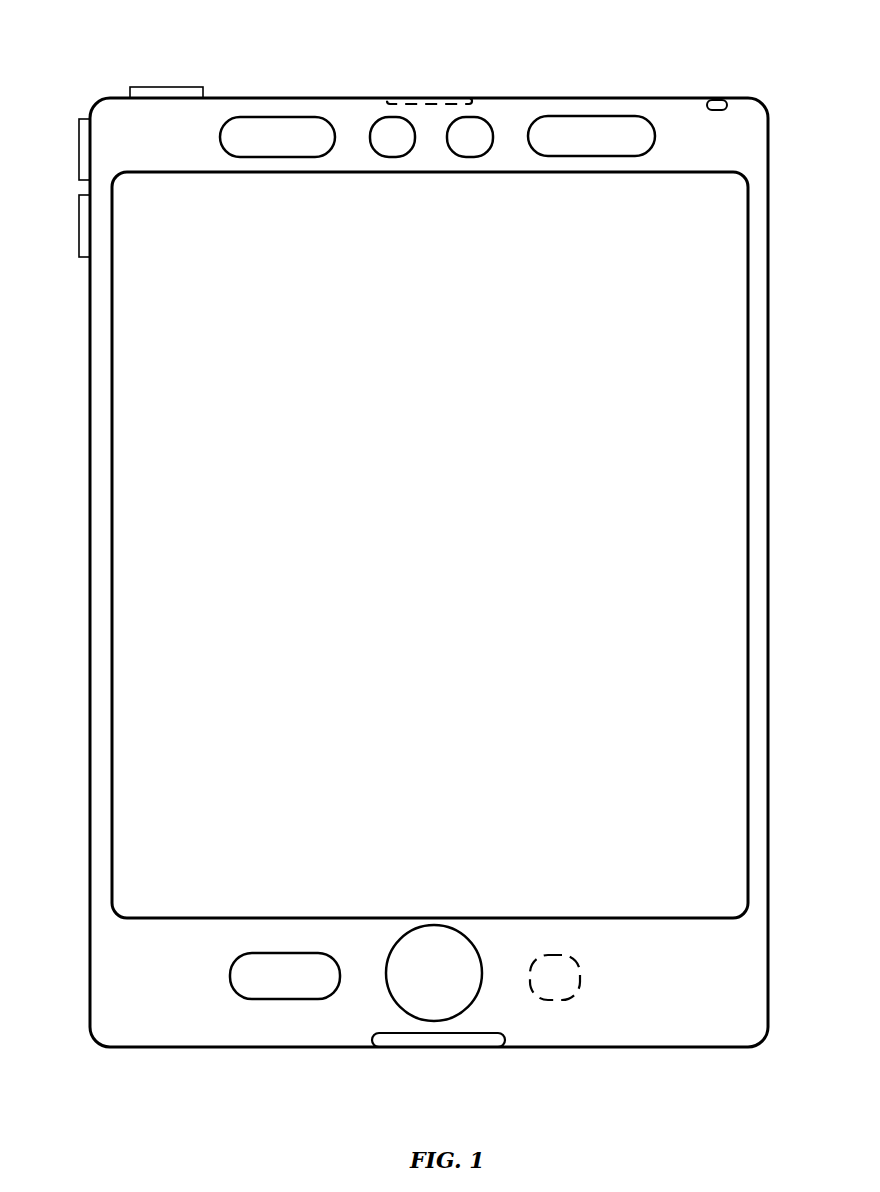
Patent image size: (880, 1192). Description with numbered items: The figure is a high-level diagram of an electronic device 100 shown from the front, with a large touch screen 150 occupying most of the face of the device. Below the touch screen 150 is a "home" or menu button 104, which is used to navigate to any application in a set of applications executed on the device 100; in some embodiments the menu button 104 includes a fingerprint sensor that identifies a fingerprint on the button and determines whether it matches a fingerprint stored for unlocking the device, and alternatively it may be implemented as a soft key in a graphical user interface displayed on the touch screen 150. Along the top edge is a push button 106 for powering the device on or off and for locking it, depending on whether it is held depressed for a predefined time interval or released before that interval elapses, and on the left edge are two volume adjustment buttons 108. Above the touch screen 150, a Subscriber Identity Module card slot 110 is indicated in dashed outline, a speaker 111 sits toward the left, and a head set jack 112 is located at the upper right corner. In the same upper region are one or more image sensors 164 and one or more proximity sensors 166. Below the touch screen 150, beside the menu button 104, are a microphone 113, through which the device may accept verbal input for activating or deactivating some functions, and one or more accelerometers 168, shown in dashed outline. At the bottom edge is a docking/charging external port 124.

The electronic device 100 is at (800, 98).
The menu button 104 is at (434, 973).
The push button 106 is at (170, 87).
The volume adjustment buttons 108 is at (79, 148).
The Subscriber Identity Module (SIM) card slot 110 is at (410, 98).
The speaker 111 is at (277, 137).
The head set jack 112 is at (713, 100).
The microphone 113 is at (285, 976).
The docking/charging external port 124 is at (477, 1047).
The touch screen 150 is at (748, 447).
The image sensors 164 is at (431, 137).
The proximity sensors 166 is at (591, 136).
The accelerometers 168 is at (555, 977).